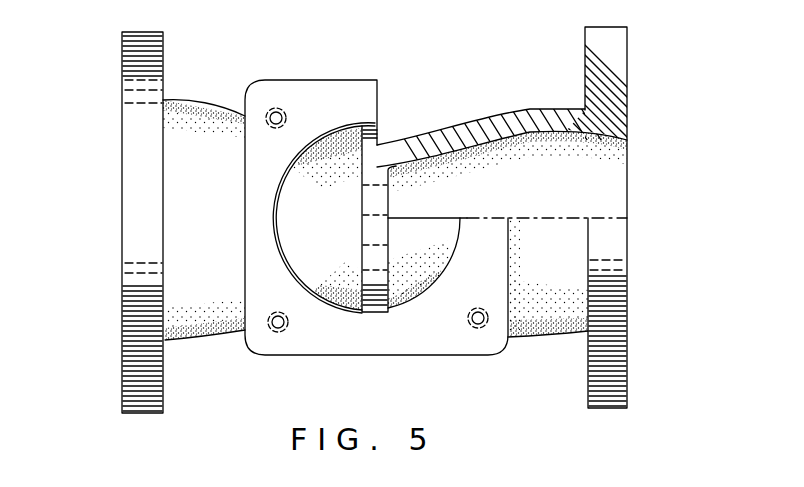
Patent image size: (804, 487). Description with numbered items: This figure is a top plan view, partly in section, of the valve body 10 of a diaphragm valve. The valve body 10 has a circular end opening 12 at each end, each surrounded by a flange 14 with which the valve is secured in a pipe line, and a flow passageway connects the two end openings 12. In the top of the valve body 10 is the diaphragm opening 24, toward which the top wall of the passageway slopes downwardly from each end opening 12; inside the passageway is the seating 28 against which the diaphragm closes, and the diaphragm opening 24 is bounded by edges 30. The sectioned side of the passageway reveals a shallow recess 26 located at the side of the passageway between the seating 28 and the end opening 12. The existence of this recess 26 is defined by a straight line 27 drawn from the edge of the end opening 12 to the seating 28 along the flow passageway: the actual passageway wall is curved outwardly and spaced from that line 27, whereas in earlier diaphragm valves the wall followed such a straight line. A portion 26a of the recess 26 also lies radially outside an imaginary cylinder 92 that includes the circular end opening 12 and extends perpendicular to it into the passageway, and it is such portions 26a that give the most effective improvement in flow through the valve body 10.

The valve body 10 is at (230, 356).
The end openings 12 is at (628, 176).
The flanges 14 is at (130, 83).
The diaphragm opening 24 is at (331, 152).
The recesses 26 is at (536, 130).
The recess portion 26a is at (563, 130).
The straight line 27 is at (466, 145).
The seating 28 is at (392, 176).
The edges of the diaphragm opening 30 is at (467, 232).
The imaginary cylinder 92 is at (512, 135).